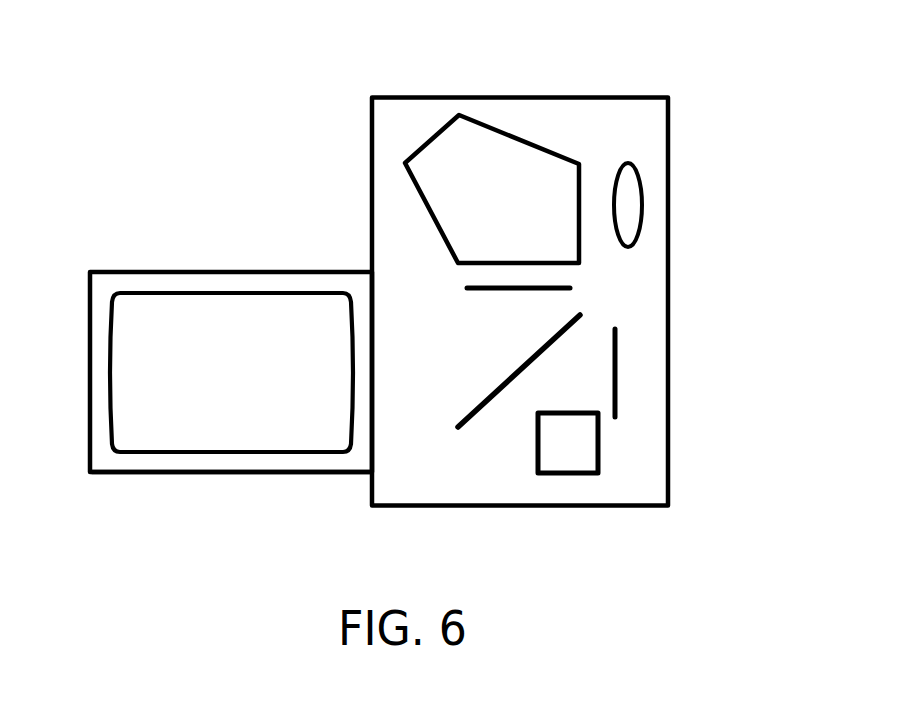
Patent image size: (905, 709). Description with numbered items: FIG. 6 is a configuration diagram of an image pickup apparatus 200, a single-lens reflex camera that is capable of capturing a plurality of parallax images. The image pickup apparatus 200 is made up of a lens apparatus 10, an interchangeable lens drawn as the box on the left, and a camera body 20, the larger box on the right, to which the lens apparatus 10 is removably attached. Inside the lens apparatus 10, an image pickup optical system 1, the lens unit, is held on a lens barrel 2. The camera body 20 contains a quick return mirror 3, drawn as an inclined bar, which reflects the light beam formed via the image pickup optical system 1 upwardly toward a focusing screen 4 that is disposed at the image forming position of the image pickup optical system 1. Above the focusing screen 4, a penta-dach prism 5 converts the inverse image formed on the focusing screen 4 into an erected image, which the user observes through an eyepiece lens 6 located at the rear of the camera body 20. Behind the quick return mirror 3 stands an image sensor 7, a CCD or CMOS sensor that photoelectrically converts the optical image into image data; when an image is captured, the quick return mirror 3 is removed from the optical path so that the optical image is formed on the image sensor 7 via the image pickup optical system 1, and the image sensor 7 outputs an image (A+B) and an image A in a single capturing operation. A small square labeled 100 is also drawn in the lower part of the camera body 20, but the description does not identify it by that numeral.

The image pickup apparatus 200 is at (752, 56).
The camera body 20 is at (668, 485).
The lens apparatus 10 is at (282, 272).
The image pickup optical system 1 is at (193, 293).
The lens barrel 2 is at (290, 473).
The quick return mirror 3 is at (492, 398).
The focusing screen 4 is at (500, 290).
The penta-dach prism 5 is at (433, 138).
The eyepiece lens 6 is at (640, 200).
The image sensor 7 is at (617, 370).
The control unit 100 is at (585, 473).